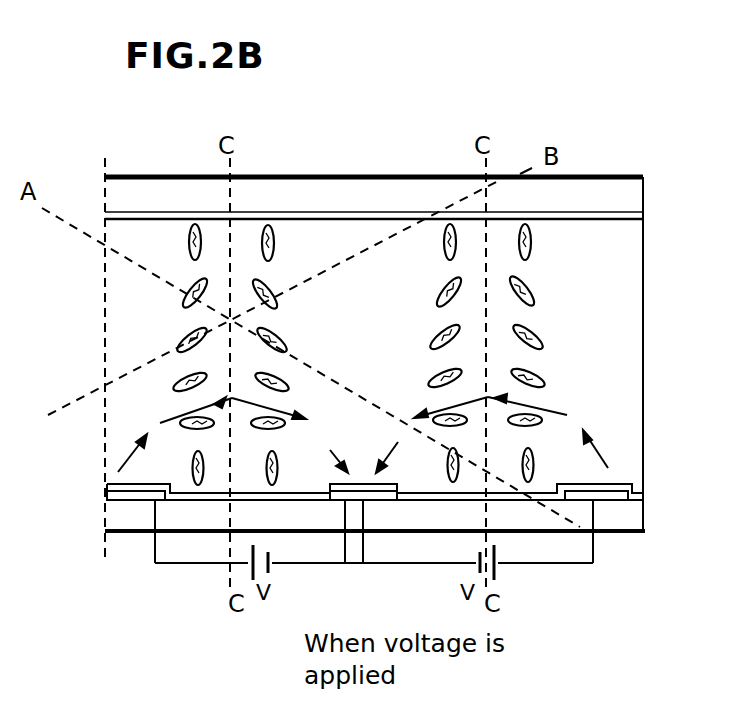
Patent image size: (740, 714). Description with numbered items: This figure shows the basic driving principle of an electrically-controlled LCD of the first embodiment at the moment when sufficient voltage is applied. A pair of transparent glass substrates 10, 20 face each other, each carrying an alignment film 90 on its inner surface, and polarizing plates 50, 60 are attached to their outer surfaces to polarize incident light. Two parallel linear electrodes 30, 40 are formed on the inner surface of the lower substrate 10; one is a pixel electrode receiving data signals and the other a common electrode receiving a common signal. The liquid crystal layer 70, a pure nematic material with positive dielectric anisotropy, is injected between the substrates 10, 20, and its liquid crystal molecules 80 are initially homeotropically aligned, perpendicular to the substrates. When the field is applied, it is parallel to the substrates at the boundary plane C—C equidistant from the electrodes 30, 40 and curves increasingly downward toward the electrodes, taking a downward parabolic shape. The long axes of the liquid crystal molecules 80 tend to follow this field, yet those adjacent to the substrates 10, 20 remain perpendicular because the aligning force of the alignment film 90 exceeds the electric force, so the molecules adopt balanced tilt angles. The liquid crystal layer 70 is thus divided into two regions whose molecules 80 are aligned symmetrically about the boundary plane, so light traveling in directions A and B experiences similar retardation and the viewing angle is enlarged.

The lower substrate 10 is at (636, 513).
The upper substrate 20 is at (640, 187).
The linear electrode 30 is at (345, 563).
The linear electrode 40 is at (606, 498).
The polarizing plate 50 is at (643, 531).
The polarizing plate 60 is at (600, 176).
The liquid crystal layer 70 is at (606, 339).
The liquid crystal molecules 80 is at (268, 228).
The alignment film 90 is at (637, 213).